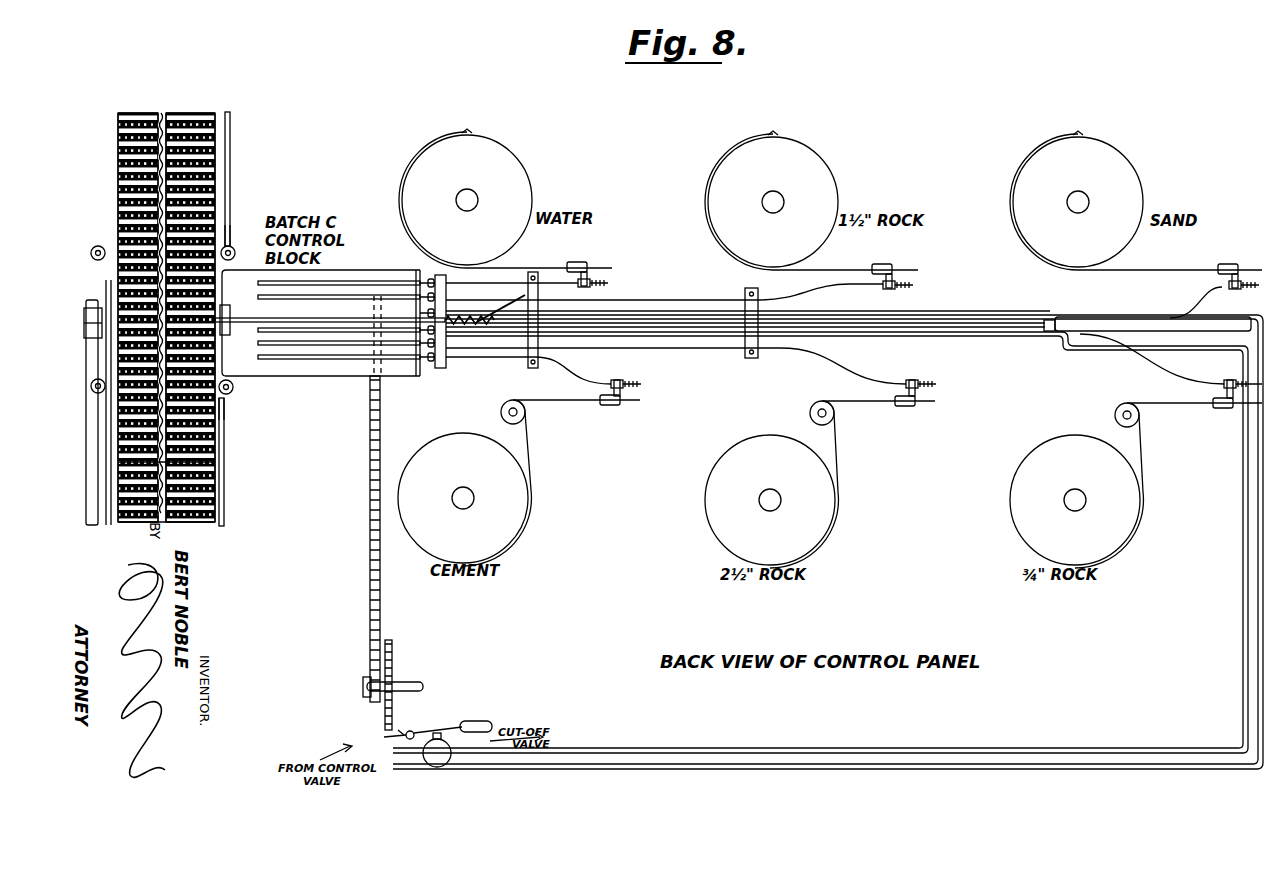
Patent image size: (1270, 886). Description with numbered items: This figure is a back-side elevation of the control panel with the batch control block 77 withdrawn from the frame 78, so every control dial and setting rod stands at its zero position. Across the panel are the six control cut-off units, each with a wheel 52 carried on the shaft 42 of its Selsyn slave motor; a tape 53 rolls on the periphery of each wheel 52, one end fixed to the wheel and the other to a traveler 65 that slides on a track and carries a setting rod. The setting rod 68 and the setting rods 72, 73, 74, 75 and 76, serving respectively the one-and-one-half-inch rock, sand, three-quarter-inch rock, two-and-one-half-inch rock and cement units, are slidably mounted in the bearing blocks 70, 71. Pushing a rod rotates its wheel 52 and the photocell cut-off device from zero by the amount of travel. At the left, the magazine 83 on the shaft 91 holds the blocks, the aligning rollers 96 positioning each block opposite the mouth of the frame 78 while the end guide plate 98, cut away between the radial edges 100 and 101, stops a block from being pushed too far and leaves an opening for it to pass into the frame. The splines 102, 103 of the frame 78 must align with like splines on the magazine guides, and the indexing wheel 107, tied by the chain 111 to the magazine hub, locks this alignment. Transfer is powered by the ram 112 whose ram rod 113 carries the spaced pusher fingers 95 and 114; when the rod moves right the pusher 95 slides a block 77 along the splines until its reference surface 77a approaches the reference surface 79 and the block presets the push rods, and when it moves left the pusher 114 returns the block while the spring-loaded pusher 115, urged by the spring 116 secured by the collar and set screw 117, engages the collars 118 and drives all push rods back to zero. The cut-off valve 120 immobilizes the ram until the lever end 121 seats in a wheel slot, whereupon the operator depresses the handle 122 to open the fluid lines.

The shaft 42 is at (470, 210).
The wheel 52 is at (500, 157).
The tape 53 is at (518, 266).
The traveler 65 is at (586, 262).
The setting rod 68 is at (488, 282).
The bearing block 70 is at (744, 302).
The bearing block 71 is at (540, 311).
The setting rod 72 is at (655, 299).
The setting rod 73 is at (922, 312).
The setting rod 74 is at (932, 338).
The setting rod 75 is at (780, 349).
The setting rod 76 is at (485, 357).
The batch control block 77 is at (186, 128).
The reference surface 77a is at (225, 328).
The frame 78 is at (316, 372).
The reference surface 79 is at (432, 364).
The magazine 83 is at (214, 472).
The shaft 91 is at (92, 305).
The pusher finger 95 is at (92, 338).
The aligning roller 96 is at (98, 246).
The end guide plate 98 is at (231, 150).
The radial edge 100 is at (230, 248).
The radial edge 101 is at (226, 405).
The spline 102 is at (232, 278).
The spline 103 is at (232, 368).
The indexing wheel 107 is at (394, 657).
The chain 111 is at (369, 557).
The power ram 112 is at (1204, 320).
The ram rod 113 is at (983, 320).
The pusher finger 114 is at (226, 302).
The pusher 115 is at (436, 276).
The spring 116 is at (458, 320).
The adjustable collar and set screw 117 is at (527, 304).
The adjustable collar and set screw 118 is at (431, 364).
The cut-off valve 120 is at (437, 767).
The lever end 121 is at (384, 737).
The handle 122 is at (478, 724).